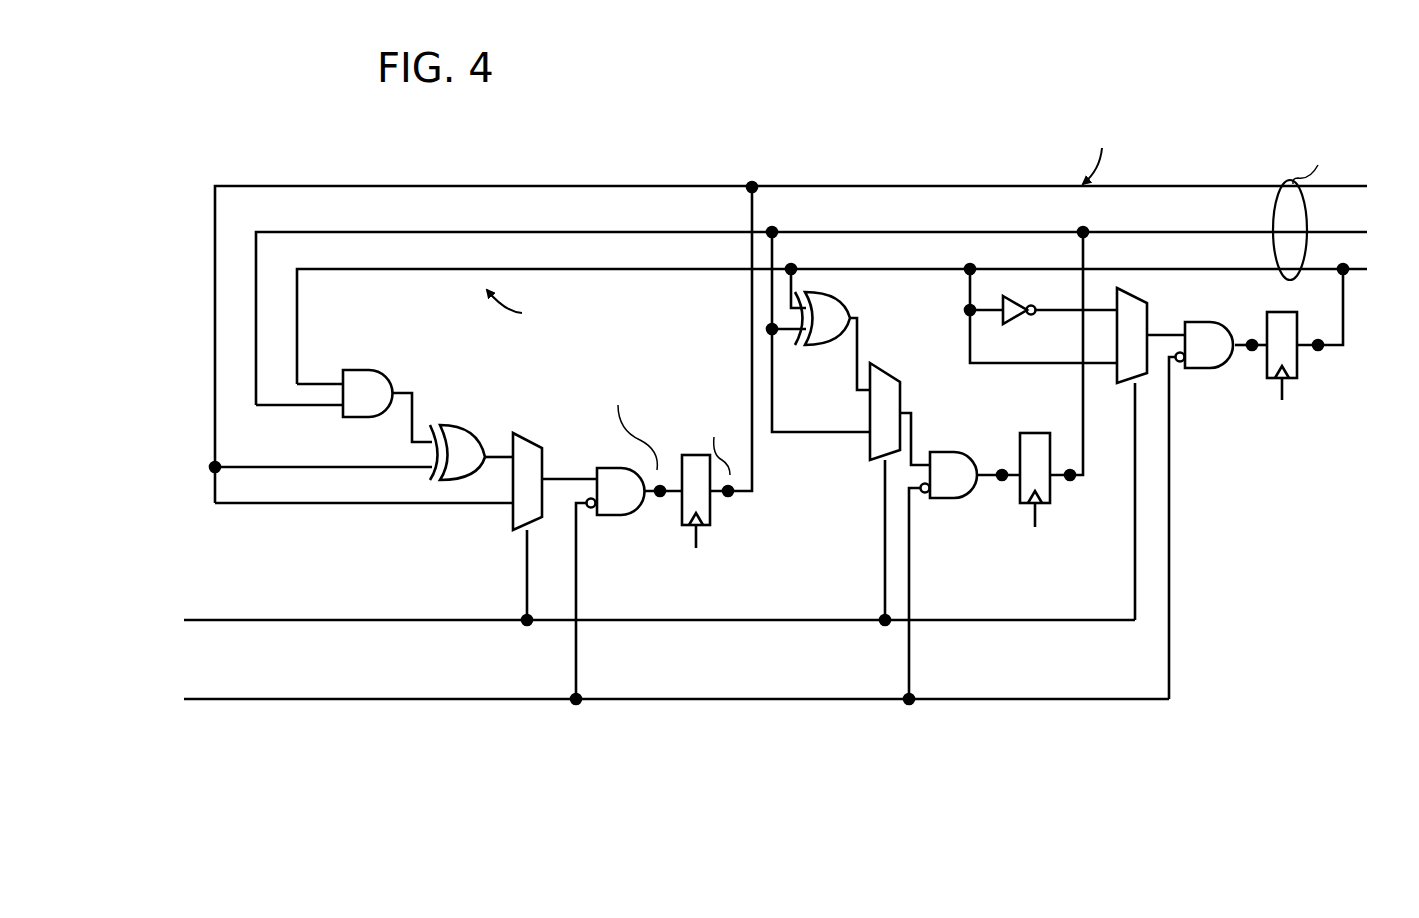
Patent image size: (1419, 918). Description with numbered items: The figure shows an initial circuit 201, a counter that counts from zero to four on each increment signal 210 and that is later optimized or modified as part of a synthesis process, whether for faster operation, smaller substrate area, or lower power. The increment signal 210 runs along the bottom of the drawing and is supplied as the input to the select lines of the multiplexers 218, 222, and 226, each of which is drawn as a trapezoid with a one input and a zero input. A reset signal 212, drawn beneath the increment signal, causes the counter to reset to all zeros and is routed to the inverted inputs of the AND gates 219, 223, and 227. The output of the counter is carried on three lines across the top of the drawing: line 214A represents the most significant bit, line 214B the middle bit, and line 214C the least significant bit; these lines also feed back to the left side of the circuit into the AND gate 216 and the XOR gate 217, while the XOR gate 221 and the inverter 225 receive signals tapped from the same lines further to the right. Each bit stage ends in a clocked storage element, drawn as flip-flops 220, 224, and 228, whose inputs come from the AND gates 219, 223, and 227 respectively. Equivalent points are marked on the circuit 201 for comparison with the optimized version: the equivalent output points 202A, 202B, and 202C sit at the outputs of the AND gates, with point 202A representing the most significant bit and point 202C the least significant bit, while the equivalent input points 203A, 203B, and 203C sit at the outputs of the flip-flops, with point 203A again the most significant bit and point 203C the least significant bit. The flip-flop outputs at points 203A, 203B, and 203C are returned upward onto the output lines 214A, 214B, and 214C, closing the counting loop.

The initial circuit 201 is at (960, 82).
The increment signal 210 is at (330, 620).
The reset signal 212 is at (330, 699).
The output line 214A is at (380, 186).
The output line 214B is at (456, 232).
The output line 214C is at (547, 269).
The AND gate 216 is at (382, 404).
The XOR gate 217 is at (452, 425).
The multiplexer 218 is at (525, 434).
The AND gate 219 is at (636, 501).
The flip-flop 220 is at (722, 505).
The XOR gate 221 is at (848, 318).
The multiplexer 222 is at (876, 366).
The AND gate 223 is at (968, 484).
The flip-flop 224 is at (1032, 433).
The inverter 225 is at (1031, 316).
The multiplexer 226 is at (1148, 316).
The AND gate 227 is at (1224, 354).
The flip-flop 228 is at (1268, 320).
The equivalent output point 202A is at (660, 500).
The equivalent output point 202B is at (1000, 485).
The equivalent output point 202C is at (1252, 355).
The equivalent input point 203A is at (742, 498).
The equivalent input point 203B is at (1068, 484).
The equivalent input point 203C is at (1322, 354).